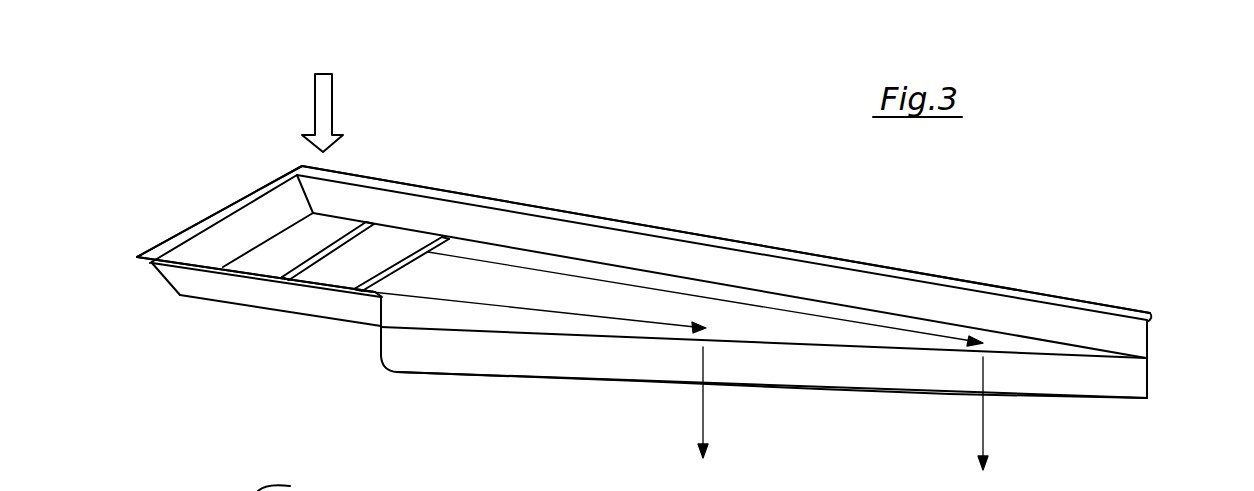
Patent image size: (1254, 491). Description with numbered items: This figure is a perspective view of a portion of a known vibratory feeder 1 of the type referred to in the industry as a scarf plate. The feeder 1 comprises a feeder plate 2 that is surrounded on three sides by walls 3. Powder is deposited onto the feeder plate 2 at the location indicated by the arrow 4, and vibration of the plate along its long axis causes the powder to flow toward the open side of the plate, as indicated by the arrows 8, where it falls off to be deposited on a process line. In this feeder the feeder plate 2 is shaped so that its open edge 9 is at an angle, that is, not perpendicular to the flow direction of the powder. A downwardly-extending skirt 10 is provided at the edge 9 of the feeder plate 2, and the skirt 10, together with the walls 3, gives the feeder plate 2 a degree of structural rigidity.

The vibratory feeder 1 is at (635, 173).
The feeder plate 2 is at (417, 318).
The walls 3 is at (233, 227).
The arrows 4 is at (333, 97).
The arrows 8 is at (658, 290).
The open edge 9 is at (573, 337).
The downwardly-extending skirt 10 is at (1122, 388).